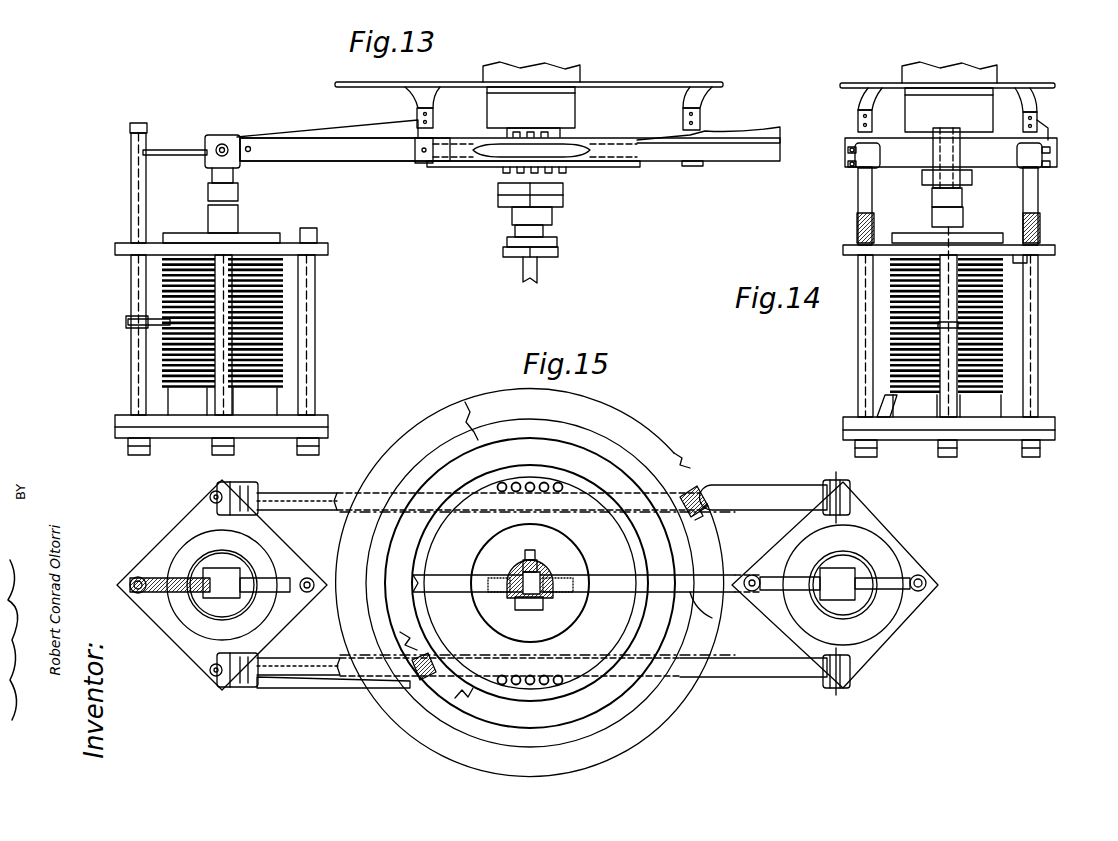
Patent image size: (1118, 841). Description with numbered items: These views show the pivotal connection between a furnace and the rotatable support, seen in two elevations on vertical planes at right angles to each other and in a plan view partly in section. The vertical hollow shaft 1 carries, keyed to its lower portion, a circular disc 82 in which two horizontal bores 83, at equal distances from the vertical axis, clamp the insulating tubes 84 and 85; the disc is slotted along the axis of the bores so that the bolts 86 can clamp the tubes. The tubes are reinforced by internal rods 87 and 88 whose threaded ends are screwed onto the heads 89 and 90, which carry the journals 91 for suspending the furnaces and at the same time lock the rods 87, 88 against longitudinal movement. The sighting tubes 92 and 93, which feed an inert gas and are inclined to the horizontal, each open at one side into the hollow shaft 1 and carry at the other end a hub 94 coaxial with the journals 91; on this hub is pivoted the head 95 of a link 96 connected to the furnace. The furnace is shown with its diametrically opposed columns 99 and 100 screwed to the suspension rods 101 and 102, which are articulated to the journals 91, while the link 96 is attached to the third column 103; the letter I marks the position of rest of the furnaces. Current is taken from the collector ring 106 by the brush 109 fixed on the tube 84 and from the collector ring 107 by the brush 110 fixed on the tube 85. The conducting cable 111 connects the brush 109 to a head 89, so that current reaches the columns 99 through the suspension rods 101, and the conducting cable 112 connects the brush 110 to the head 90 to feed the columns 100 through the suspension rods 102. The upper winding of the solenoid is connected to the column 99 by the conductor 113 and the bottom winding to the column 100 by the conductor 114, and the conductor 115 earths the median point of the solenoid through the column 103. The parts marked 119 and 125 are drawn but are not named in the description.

In FIG. 15, the vertical hollow shaft 1 is at (542, 572).
In FIG. 13, the circular disc 82 is at (482, 167).
In FIG. 14, the circular disc 82 is at (880, 142).
In FIG. 15, the circular disc 82 is at (480, 534).
In FIG. 15, the horizontal bores 83 is at (594, 513).
In FIG. 13, the insulating tube 84 is at (344, 158).
In FIG. 15, the insulating tube 84 is at (318, 660).
In FIG. 15, the insulating tube 85 is at (318, 511).
In FIG. 13, the bolts 86 is at (561, 173).
In FIG. 14, the bolts 86 is at (852, 167).
In FIG. 15, the bolts 86 is at (557, 483).
In FIG. 15, the internal rod 87 is at (283, 660).
In FIG. 15, the internal rod 88 is at (291, 504).
In FIG. 15, the head 89 is at (236, 688).
In FIG. 15, the head 90 is at (240, 492).
In FIG. 14, the journals 91 is at (850, 152).
In FIG. 15, the journals 91 is at (211, 497).
In FIG. 15, the sighting tube 92 is at (445, 580).
In FIG. 15, the sighting tube 93 is at (714, 612).
In FIG. 13, the hub 94 is at (225, 145).
In FIG. 15, the hub 94 is at (235, 566).
In FIG. 13, the head of link 95 is at (212, 135).
In FIG. 13, the link 96 is at (168, 150).
In FIG. 15, the link 96 is at (178, 594).
In FIG. 14, the column 99 is at (1036, 351).
In FIG. 14, the column 100 is at (860, 357).
In FIG. 14, the suspension rod 101 is at (1036, 193).
In FIG. 14, the suspension rod 102 is at (860, 208).
In FIG. 13, the third column 103 is at (131, 208).
In FIG. 14, the third column 103 is at (945, 410).
In FIG. 13, the collector ring 106 is at (660, 84).
In FIG. 14, the collector ring 106 is at (949, 97).
In FIG. 15, the collector ring 106 is at (470, 432).
In FIG. 13, the collector ring 107 is at (725, 87).
In FIG. 14, the collector ring 107 is at (1008, 84).
In FIG. 15, the collector ring 107 is at (421, 425).
In FIG. 13, the brush 109 is at (420, 100).
In FIG. 14, the brush 109 is at (1035, 101).
In FIG. 15, the brush 109 is at (420, 656).
In FIG. 13, the brush 110 is at (700, 110).
In FIG. 14, the brush 110 is at (866, 101).
In FIG. 15, the brush 110 is at (702, 490).
In FIG. 13, the conducting cable 111 is at (335, 134).
In FIG. 14, the conducting cable 111 is at (1047, 134).
In FIG. 15, the conducting cable 111 is at (312, 689).
In FIG. 13, the conducting cable 112 is at (727, 131).
In FIG. 15, the conducting cable 112 is at (755, 485).
In FIG. 14, the conductor 113 is at (1030, 262).
In FIG. 14, the conductor 114 is at (880, 398).
In FIG. 13, the conductor 115 is at (150, 312).
In FIG. 15, the block 119 is at (530, 610).
In FIG. 13, the stem 125 is at (537, 270).
In FIG. 13, the position of rest I is at (275, 362).
In FIG. 14, the position of rest I is at (1003, 312).
In FIG. 15, the position of rest I is at (527, 585).